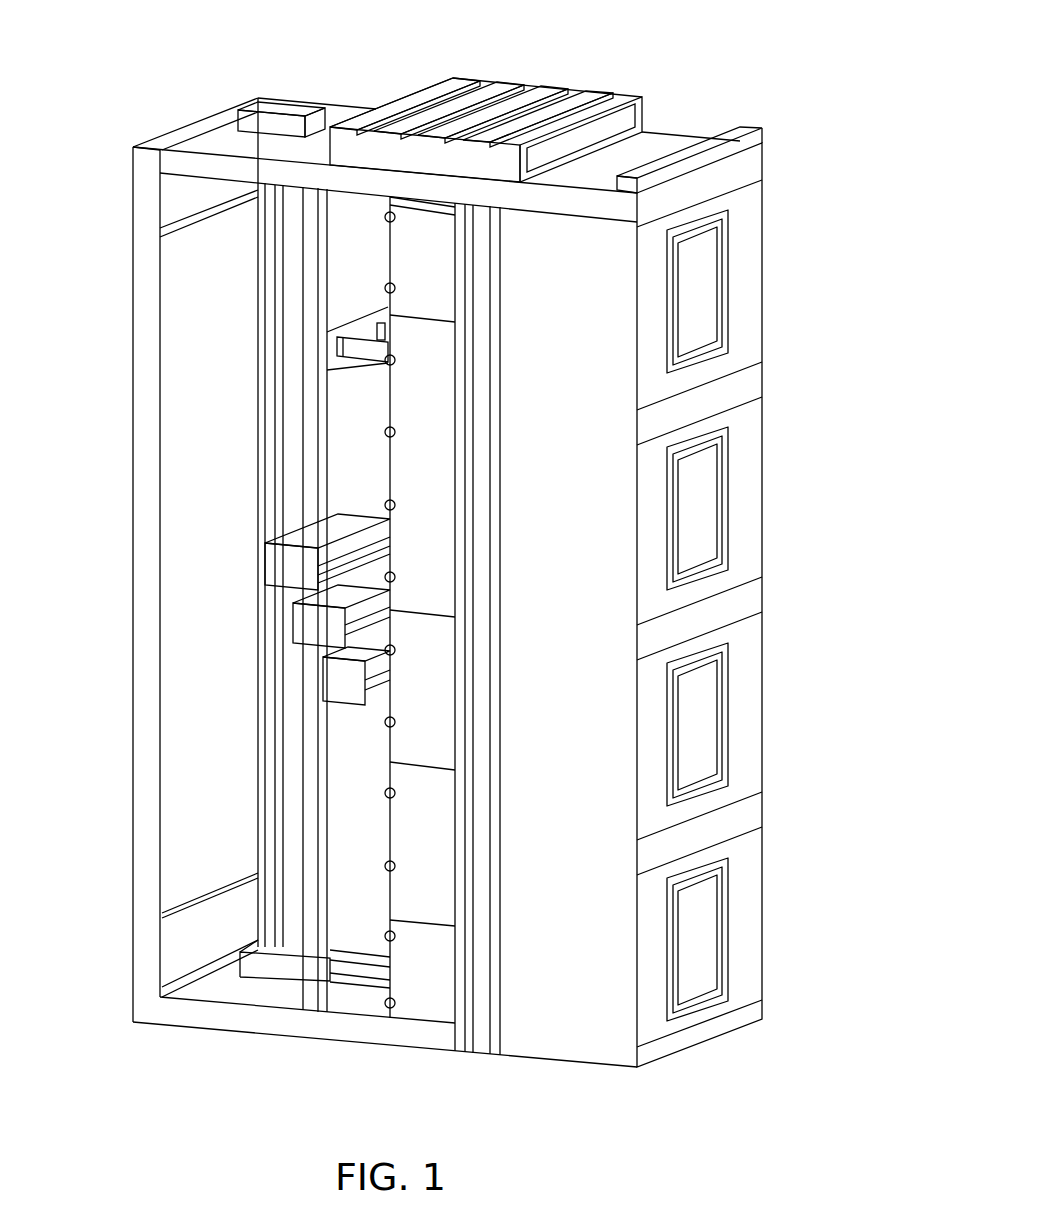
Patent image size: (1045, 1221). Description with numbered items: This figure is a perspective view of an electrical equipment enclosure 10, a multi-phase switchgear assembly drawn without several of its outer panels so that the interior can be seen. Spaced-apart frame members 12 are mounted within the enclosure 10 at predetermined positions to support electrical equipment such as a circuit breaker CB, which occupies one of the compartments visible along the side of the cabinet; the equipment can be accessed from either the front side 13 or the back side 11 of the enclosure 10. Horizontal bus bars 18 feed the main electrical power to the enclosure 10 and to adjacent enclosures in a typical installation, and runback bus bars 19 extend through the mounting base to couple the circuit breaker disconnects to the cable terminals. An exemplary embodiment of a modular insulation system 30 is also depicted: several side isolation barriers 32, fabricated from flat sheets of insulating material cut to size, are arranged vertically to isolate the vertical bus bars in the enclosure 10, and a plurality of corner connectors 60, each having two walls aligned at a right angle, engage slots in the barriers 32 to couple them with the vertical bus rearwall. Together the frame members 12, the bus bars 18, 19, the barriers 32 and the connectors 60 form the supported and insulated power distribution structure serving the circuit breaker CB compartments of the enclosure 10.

The electrical equipment enclosure 10 is at (725, 100).
The back side 11 is at (100, 750).
The frame members 12 is at (305, 805).
The front side 13 is at (822, 585).
The horizontal bus bars 18 is at (350, 325).
The runback bus bars 19 is at (362, 365).
The insulation system 30 is at (350, 905).
The side isolation barriers 32 is at (440, 218).
The corner connectors 60 is at (396, 220).
The circuit breaker CB is at (776, 310).